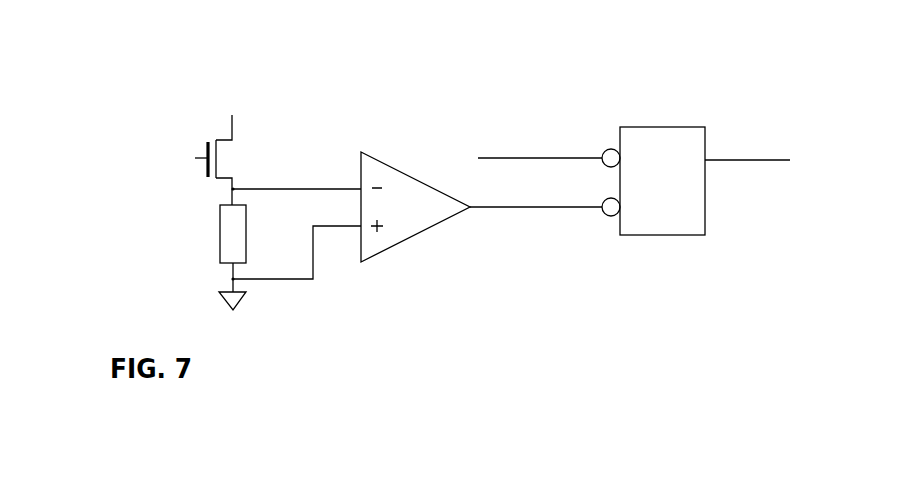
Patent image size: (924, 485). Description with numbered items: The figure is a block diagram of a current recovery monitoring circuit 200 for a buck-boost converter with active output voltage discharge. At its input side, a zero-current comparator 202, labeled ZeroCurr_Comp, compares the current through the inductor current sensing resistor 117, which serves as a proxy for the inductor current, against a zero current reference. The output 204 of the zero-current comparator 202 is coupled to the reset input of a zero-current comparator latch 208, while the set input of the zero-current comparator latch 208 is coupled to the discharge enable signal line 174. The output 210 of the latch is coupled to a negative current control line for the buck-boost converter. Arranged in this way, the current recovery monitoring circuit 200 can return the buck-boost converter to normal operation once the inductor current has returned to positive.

The current recovery monitoring circuit 200 is at (183, 94).
The inductor current sensing resistor 117 is at (220, 238).
The zero-current comparator 202 is at (382, 162).
The discharge enable signal line 174 is at (517, 158).
The output of zero-current comparator 204 is at (582, 207).
The zero-current comparator latch 208 is at (667, 125).
The output 210 is at (755, 162).